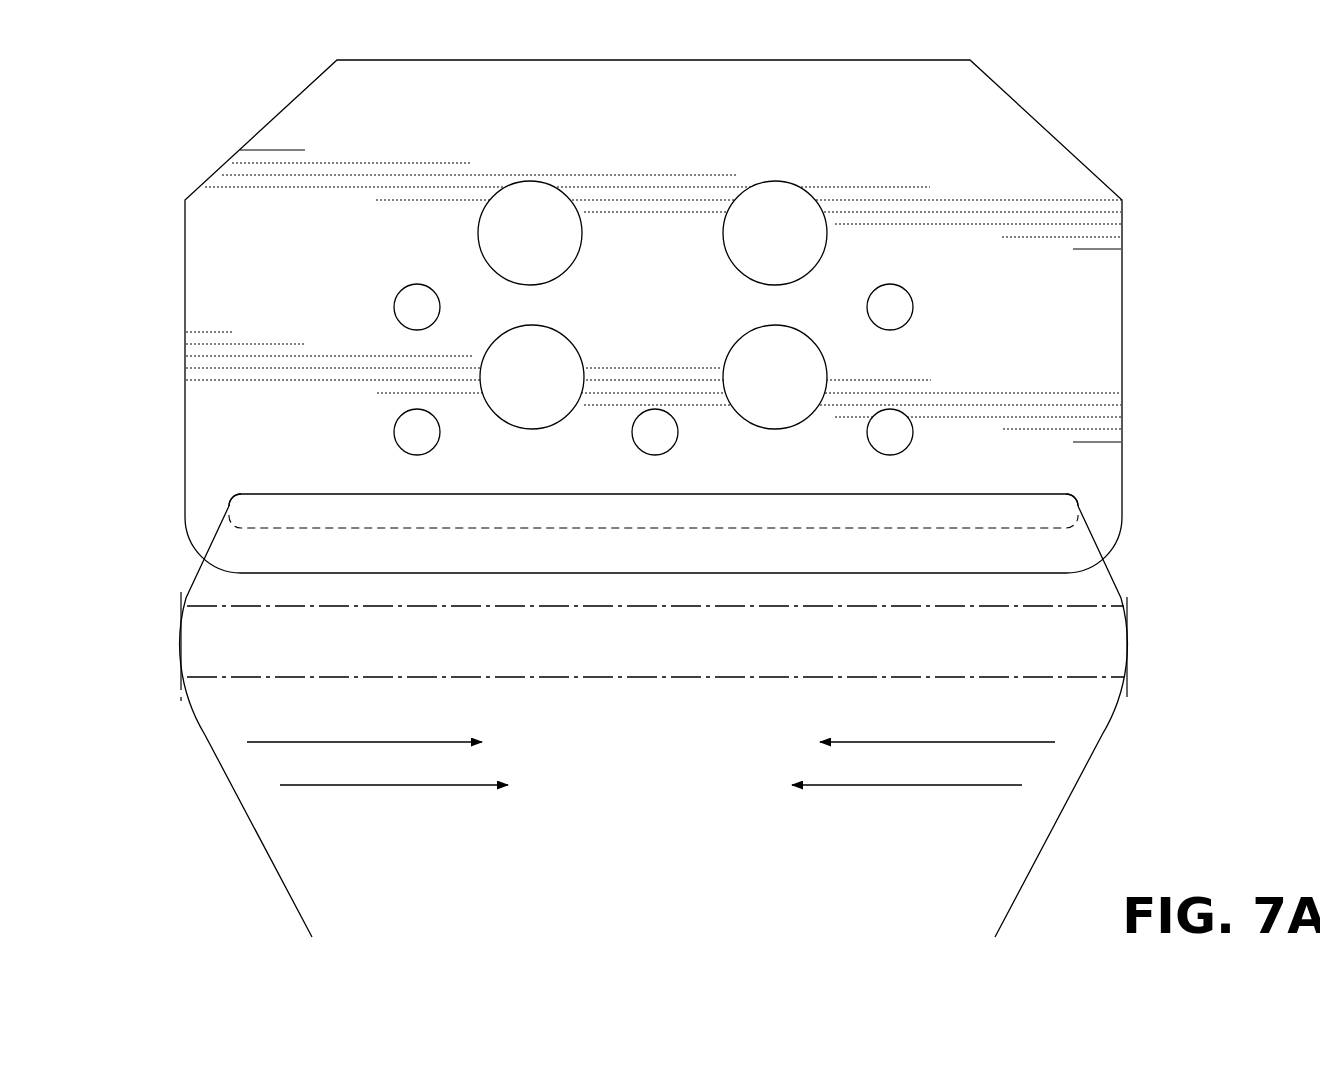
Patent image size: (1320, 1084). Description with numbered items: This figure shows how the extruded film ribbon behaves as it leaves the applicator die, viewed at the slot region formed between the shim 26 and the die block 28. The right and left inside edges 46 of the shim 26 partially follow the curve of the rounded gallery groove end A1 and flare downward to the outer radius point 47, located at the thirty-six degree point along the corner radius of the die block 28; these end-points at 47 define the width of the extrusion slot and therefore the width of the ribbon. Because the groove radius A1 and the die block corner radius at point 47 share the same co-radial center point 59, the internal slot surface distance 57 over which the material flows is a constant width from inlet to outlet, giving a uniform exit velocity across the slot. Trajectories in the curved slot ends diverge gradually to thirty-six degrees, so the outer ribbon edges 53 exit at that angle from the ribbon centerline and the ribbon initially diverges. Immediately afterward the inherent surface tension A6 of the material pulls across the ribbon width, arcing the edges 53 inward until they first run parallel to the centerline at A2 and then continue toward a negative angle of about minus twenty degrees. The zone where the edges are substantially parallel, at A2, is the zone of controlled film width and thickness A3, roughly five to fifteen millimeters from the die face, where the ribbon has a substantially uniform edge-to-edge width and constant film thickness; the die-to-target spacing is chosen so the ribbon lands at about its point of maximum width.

The shim 26 is at (653, 288).
The die block 28 is at (433, 575).
The inside edges of the shim 46 is at (217, 522).
The outer radius point 47 is at (203, 558).
The ribbon edges 53 is at (178, 615).
The internal extrusion slot surface distance 57 is at (1050, 512).
The co-radial center point 59 is at (248, 513).
The gallery groove rounded end A1 is at (232, 495).
The zone where ribbon edges are parallel to centerline A2 is at (188, 639).
The zone of controlled film width and thickness A3 is at (460, 608).
The surface tension A6 is at (651, 768).